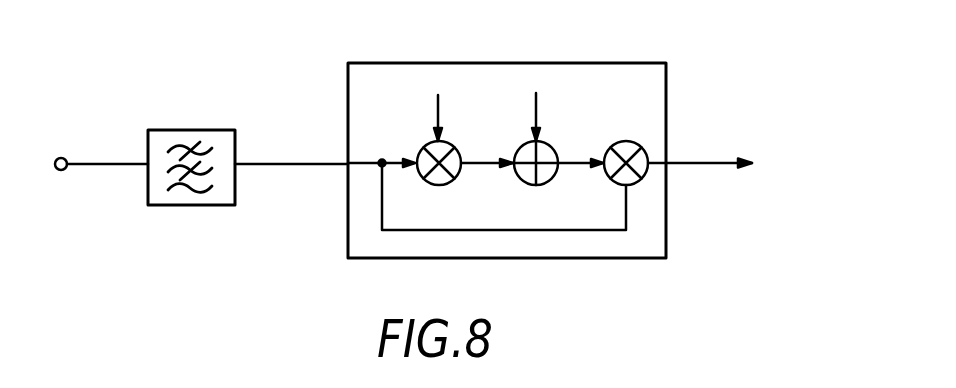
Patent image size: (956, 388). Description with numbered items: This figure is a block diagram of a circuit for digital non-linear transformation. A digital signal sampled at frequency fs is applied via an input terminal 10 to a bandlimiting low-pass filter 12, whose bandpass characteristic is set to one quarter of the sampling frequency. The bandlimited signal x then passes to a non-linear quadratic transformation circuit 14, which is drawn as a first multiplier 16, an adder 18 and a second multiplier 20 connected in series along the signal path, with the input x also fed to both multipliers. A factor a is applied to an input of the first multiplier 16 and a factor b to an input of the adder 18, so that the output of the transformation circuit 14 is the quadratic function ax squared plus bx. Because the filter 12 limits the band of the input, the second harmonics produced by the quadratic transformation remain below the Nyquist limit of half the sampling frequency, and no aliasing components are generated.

The input terminal 10 is at (63, 158).
The bandlimiting low-pass filter 12 is at (181, 205).
The non-linear quadratic transformation circuit 14 is at (602, 134).
The first multiplier 16 is at (437, 180).
The adder 18 is at (548, 170).
The second multiplier 20 is at (627, 147).